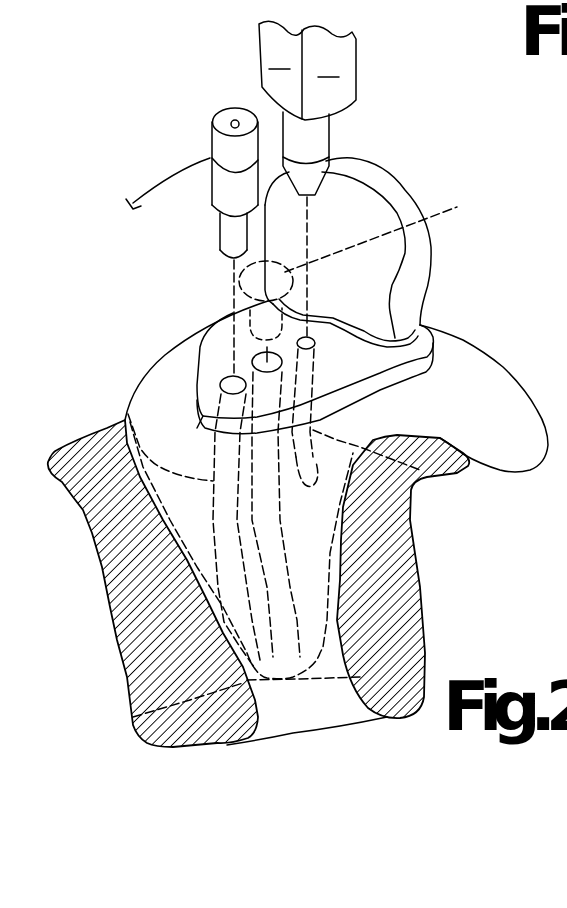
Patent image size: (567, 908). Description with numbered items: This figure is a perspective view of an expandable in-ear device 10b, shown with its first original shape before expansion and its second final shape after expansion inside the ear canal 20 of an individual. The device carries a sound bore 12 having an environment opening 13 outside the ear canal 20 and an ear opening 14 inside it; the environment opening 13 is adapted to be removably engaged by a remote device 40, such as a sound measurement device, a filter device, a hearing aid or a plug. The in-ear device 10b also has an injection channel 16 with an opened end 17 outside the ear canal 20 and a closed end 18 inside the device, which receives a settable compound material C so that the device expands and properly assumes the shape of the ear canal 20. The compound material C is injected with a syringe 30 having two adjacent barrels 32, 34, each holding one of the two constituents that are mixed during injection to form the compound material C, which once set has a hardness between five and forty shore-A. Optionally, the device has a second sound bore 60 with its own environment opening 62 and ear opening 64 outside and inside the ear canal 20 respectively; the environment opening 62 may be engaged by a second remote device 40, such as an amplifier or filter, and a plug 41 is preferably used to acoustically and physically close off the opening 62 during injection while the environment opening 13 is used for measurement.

The expandable in-ear device 10b is at (500, 372).
The sound bore 12 is at (123, 407).
The environment opening 13 is at (223, 380).
The ear opening 14 is at (140, 717).
The injection channel 16 is at (427, 475).
The opened end 17 is at (383, 252).
The closed end 18 is at (405, 522).
The ear canal 20 is at (277, 715).
The syringe 30 is at (357, 55).
The barrel 32 is at (283, 80).
The barrel 34 is at (330, 95).
The compound material C is at (307, 143).
The remote device 40 is at (200, 148).
The plug 41 is at (210, 192).
The second sound bore 60 is at (350, 617).
The environment opening 62 is at (250, 322).
The ear opening 64 is at (360, 675).